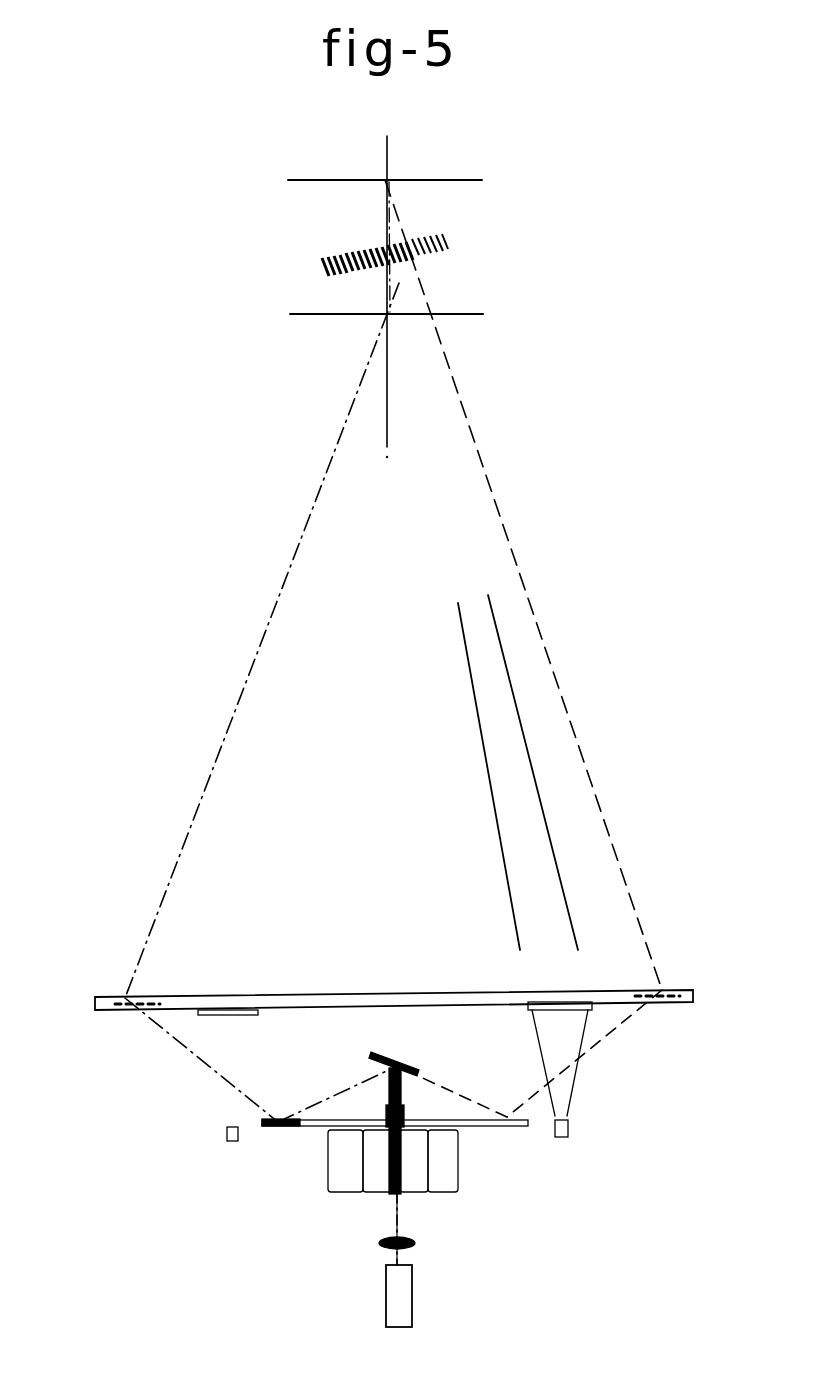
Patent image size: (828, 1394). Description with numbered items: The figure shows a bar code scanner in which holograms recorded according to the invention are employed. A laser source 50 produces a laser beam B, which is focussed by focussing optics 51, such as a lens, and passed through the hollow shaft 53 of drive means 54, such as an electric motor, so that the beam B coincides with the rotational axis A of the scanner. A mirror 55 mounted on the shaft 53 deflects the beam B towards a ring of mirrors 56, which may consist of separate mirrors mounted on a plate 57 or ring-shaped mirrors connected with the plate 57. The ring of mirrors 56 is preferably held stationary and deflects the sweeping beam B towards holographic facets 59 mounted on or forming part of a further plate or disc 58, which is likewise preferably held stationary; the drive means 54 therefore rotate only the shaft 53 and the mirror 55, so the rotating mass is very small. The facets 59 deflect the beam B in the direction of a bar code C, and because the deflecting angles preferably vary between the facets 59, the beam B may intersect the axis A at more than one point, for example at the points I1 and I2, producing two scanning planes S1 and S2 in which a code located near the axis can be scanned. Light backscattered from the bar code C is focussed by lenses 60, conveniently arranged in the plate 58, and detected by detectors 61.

The laser source 50 is at (404, 1306).
The focussing optics 51 is at (413, 1246).
The hollow shaft 53 is at (405, 1090).
The drive means 54 is at (457, 1178).
The mirror 55 is at (393, 1058).
The ring of mirrors 56 is at (280, 1126).
The plate 57 is at (325, 1120).
The disc 58 is at (352, 997).
The holographic facets 59 is at (122, 995).
The lenses 60 is at (246, 1015).
The detectors 61 is at (225, 1140).
The rotational axis A is at (388, 425).
The laser beam B is at (286, 571).
The bar code C is at (354, 247).
The first scanning plane S1 is at (455, 313).
The second scanning plane S2 is at (458, 179).
The first point of intersection I1 is at (387, 314).
The second point of intersection I2 is at (385, 180).